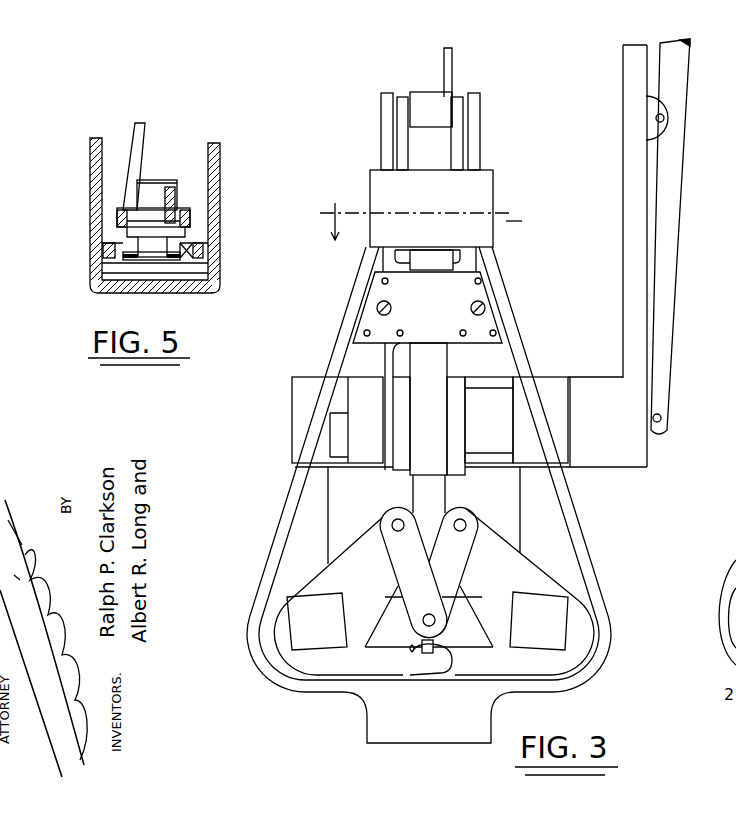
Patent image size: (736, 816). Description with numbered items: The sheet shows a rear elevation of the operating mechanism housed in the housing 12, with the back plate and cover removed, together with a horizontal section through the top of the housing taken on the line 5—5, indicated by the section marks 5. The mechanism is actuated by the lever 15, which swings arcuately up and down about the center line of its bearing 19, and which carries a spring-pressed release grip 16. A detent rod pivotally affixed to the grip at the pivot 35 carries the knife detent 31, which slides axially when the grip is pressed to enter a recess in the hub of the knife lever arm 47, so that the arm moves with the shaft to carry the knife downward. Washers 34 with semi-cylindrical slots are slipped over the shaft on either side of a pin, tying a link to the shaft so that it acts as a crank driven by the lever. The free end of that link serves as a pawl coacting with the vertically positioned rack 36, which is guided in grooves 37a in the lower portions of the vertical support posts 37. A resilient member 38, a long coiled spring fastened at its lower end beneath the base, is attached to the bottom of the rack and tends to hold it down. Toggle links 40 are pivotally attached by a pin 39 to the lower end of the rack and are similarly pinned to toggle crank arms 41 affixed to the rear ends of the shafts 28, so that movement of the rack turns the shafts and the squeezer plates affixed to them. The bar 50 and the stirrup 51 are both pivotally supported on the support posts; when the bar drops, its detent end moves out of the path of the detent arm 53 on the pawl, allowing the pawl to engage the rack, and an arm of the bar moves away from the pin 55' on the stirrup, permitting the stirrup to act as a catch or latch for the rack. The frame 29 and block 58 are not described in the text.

In FIG. 3, the housing 12 is at (483, 208).
In FIG. 5, the housing 12 is at (90, 178).
In FIG. 3, the section line 5— 5 is at (411, 221).
In FIG. 3, the lever 15 is at (636, 267).
In FIG. 3, the release grip 16 is at (670, 238).
In FIG. 3, the bearing 19 is at (292, 420).
In FIG. 3, the shafts 28 is at (307, 633).
In FIG. 3, the frame 29 is at (283, 527).
In FIG. 3, the knife detent 31 is at (343, 450).
In FIG. 3, the washers 34 is at (403, 463).
In FIG. 3, the pivot 35 is at (658, 422).
In FIG. 3, the rack 36 is at (432, 363).
In FIG. 5, the rack 36 is at (188, 244).
In FIG. 3, the support posts 37 is at (390, 120).
In FIG. 5, the support posts 37 is at (205, 254).
In FIG. 5, the grooves 37a is at (142, 240).
In FIG. 3, the resilient member 38 is at (447, 673).
In FIG. 3, the pin 39 is at (423, 625).
In FIG. 3, the toggle links 40 is at (412, 574).
In FIG. 3, the toggle crank arms 41 is at (330, 577).
In FIG. 3, the knife lever arm 47 is at (387, 357).
In FIG. 5, the knife lever arm 47 is at (140, 132).
In FIG. 3, the bar 50 is at (447, 65).
In FIG. 5, the bar 50 is at (176, 205).
In FIG. 3, the stirrup 51 is at (403, 151).
In FIG. 5, the stirrup 51 is at (148, 223).
In FIG. 5, the detent arm 53 is at (153, 172).
In FIG. 5, the pin 55' is at (164, 202).
In FIG. 3, the block 58 is at (487, 410).